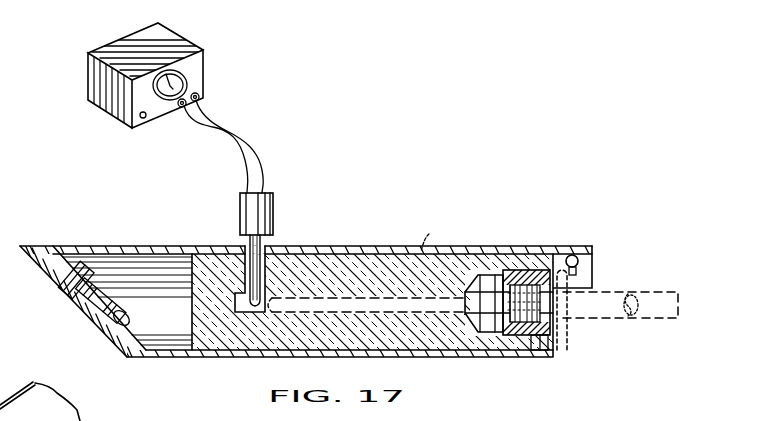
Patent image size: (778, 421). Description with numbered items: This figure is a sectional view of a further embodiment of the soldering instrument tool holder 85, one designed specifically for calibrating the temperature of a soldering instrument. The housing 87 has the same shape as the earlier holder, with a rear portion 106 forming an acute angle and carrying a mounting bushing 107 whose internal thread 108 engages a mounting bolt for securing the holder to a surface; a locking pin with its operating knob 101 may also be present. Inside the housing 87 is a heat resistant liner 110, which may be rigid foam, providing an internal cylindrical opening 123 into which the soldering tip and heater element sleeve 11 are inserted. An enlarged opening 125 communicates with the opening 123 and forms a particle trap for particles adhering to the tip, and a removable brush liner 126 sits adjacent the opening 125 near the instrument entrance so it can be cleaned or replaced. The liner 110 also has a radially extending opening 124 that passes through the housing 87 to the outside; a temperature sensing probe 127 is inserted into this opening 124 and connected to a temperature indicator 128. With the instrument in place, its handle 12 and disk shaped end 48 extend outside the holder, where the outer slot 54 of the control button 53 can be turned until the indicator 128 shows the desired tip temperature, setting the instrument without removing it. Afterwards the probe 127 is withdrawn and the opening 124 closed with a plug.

The temperature indicator 128 is at (208, 63).
The temperature sensing probe 127 is at (275, 194).
The radially extending opening 124 is at (241, 243).
The mounting bushing 107 is at (63, 247).
The housing 87 is at (284, 248).
The tool holder 85 is at (353, 231).
The heater element sleeve 11 is at (436, 236).
The internal cylindrical opening 123 is at (243, 314).
The rear portion 106 is at (122, 351).
The internal thread 108 is at (70, 323).
The heat resistant liner 110 is at (416, 357).
The enlarged opening 125 is at (487, 338).
The removable brush liner 126 is at (530, 337).
The disk shaped end 48 is at (557, 340).
The operating knob 101 is at (585, 262).
The handle 12 is at (630, 292).
The outer slot 54 is at (623, 319).
The control button 53 is at (630, 318).